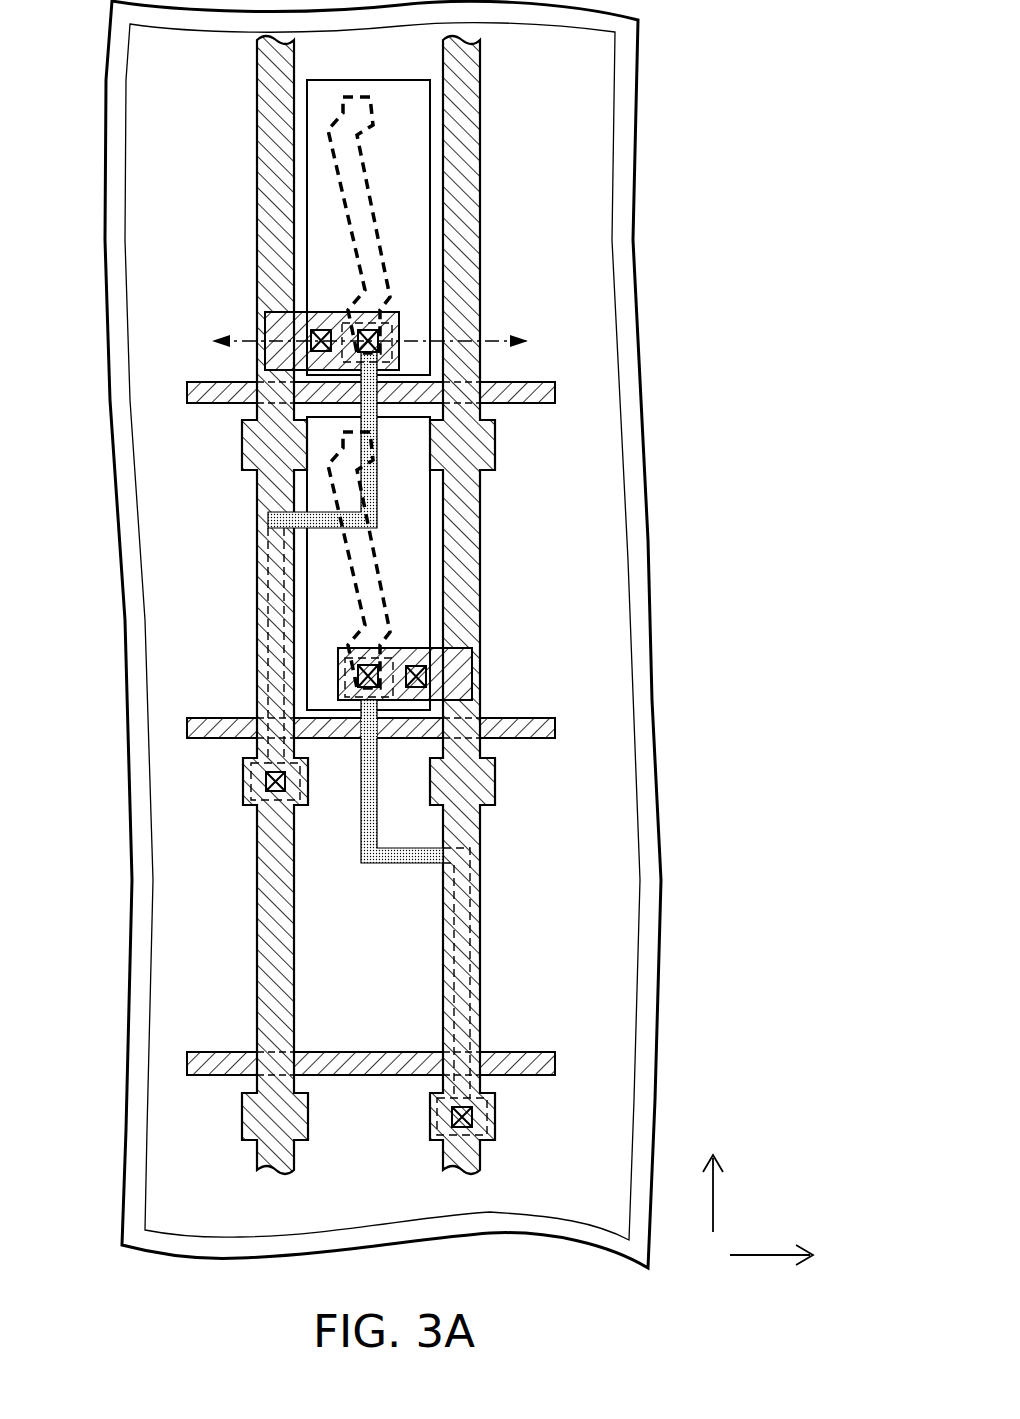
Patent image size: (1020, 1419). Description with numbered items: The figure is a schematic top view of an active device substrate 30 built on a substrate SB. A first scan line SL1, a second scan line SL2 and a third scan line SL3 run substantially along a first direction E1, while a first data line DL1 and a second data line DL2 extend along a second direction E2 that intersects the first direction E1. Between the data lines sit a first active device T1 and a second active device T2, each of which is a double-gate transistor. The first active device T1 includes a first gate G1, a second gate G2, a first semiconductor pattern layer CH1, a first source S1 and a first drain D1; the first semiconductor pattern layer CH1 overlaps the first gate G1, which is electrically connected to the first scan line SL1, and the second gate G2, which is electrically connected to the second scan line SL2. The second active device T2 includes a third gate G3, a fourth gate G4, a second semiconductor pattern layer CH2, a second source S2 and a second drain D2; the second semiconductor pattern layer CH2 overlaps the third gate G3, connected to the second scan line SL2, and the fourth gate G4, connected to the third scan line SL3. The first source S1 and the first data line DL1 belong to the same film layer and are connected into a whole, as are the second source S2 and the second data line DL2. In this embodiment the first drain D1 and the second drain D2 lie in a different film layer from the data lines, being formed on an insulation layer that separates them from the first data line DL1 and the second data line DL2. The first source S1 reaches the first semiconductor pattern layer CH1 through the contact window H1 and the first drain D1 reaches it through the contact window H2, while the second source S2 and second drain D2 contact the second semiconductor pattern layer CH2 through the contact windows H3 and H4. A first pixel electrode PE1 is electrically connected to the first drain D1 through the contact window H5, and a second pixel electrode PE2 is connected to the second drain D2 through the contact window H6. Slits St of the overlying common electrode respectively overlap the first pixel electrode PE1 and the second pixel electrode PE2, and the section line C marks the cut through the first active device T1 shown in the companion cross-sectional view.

The slits St is at (333, 127).
The substrate SB is at (588, 228).
The first data line DL1 is at (272, 173).
The second data line DL2 is at (480, 171).
The first scan line SL1 is at (540, 401).
The second scan line SL2 is at (540, 736).
The third scan line SL3 is at (540, 1052).
The first pixel electrode PE1 is at (308, 220).
The second pixel electrode PE2 is at (308, 613).
The first gate G1 is at (362, 398).
The second gate G2 is at (278, 724).
The third gate G3 is at (368, 728).
The fourth gate G4 is at (463, 1062).
The first semiconductor pattern layer CH1 is at (371, 463).
The second semiconductor pattern layer CH2 is at (405, 853).
The first source S1 is at (256, 776).
The second source S2 is at (495, 1118).
The first drain D1 is at (338, 318).
The second drain D2 is at (402, 660).
The contact window H1 is at (275, 793).
The contact window H2 is at (380, 335).
The contact window H3 is at (472, 1114).
The contact window H4 is at (358, 678).
The contact window H5 is at (313, 345).
The contact window H6 is at (427, 677).
The first active device T1 is at (778, 43).
The second active device T2 is at (778, 262).
The section line C-C' C is at (367, 328).
The first direction E1 is at (771, 1267).
The second direction E2 is at (728, 1193).
The active device substrate 30 is at (531, 1290).